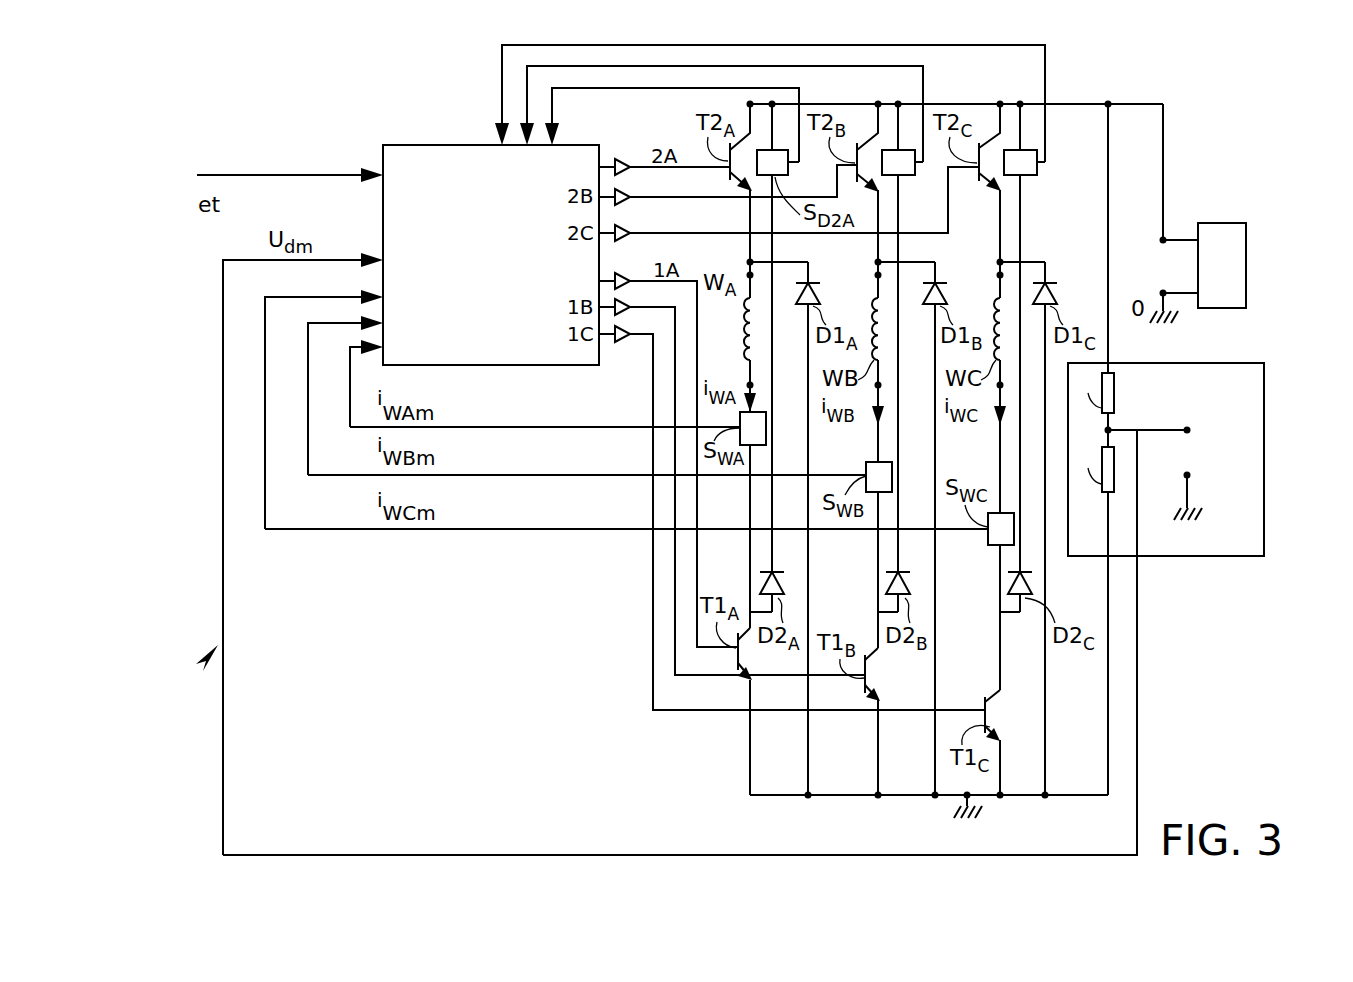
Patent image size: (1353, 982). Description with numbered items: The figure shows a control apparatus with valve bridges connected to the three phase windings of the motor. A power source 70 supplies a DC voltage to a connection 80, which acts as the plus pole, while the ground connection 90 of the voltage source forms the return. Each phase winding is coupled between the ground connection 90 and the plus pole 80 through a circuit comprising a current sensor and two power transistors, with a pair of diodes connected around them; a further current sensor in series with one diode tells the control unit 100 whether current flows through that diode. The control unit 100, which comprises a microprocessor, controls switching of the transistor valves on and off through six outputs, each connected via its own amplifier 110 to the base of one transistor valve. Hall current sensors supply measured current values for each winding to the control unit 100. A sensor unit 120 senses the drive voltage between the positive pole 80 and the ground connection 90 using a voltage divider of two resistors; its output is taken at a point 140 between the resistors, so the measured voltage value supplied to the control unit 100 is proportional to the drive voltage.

The control unit 100 is at (476, 222).
The amplifier 110 is at (620, 158).
The power source 70 is at (1237, 280).
The connection 80 is at (1165, 239).
The ground connection 90 is at (968, 797).
The sensor unit 120 is at (1206, 359).
The point 140 is at (1110, 428).